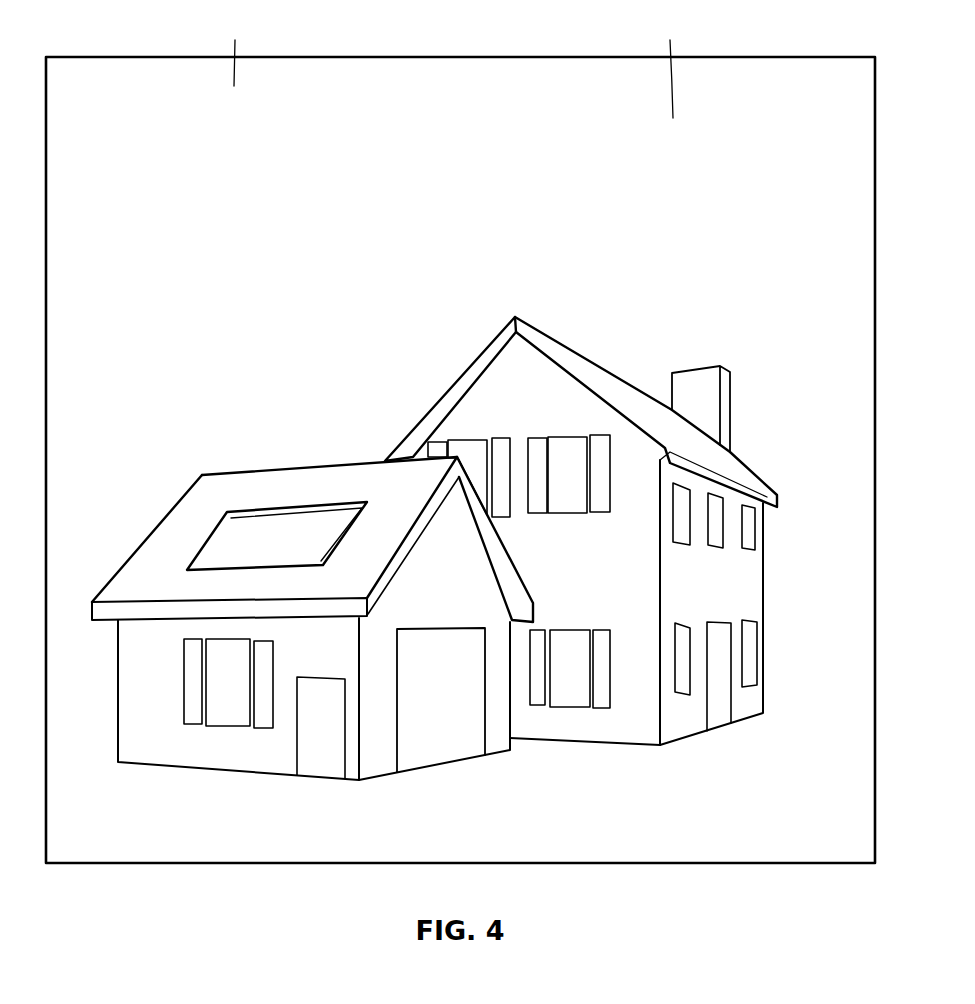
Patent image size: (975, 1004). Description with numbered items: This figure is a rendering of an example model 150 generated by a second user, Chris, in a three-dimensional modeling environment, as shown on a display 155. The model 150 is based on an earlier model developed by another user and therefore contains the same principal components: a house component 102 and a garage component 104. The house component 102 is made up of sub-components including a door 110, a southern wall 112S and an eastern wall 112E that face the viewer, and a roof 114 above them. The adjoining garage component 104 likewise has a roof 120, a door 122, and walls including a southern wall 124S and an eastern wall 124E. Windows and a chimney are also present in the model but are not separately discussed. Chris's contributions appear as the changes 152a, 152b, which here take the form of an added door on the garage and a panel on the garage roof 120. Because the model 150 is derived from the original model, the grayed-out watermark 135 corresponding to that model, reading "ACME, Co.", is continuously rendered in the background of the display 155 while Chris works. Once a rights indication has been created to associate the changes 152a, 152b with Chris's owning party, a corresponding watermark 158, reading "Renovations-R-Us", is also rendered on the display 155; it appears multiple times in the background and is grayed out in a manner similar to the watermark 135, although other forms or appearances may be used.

The house component 102 is at (614, 547).
The garage component 104 is at (306, 625).
The door 110 is at (713, 703).
The eastern wall 112E is at (751, 633).
The southern wall 112S is at (607, 723).
The roof 114 is at (735, 473).
The roof 120 is at (306, 521).
The door 122 is at (445, 740).
The eastern wall 124E is at (434, 726).
The southern wall 124S is at (238, 724).
The watermark 135 is at (453, 67).
The model 150 is at (424, 292).
The change 152a is at (317, 758).
The change 152b is at (313, 500).
The display 155 is at (502, 55).
The watermark 158 is at (353, 117).